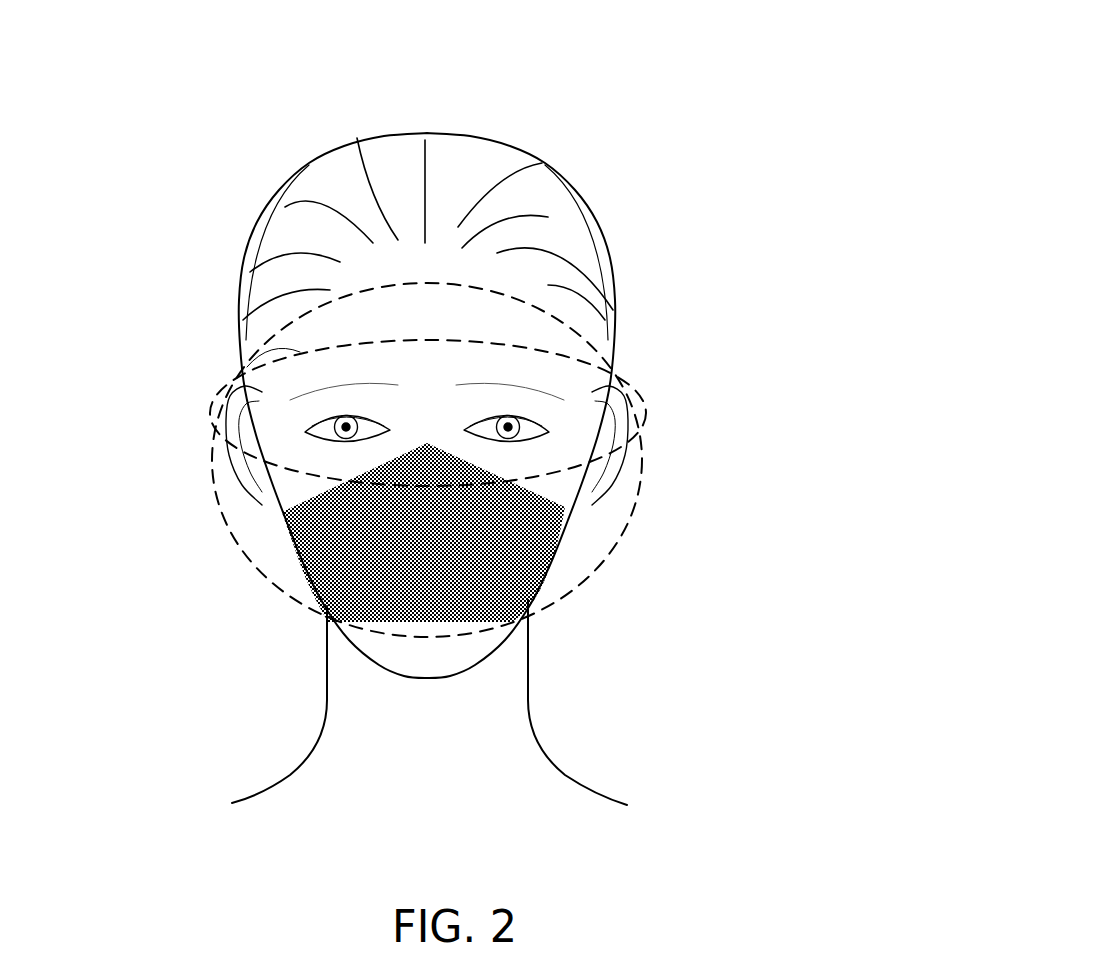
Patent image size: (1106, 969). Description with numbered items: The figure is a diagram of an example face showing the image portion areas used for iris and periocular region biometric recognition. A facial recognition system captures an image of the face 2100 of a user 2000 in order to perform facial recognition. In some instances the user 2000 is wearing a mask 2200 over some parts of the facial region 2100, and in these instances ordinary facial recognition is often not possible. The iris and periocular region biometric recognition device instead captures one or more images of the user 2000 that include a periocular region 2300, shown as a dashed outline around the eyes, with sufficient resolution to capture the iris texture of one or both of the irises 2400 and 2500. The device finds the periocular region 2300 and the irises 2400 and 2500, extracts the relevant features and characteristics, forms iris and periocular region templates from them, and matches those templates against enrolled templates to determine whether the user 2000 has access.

The user 2000 is at (900, 72).
The face 2100 is at (645, 460).
The mask 2200 is at (427, 542).
The periocular region 2300 is at (637, 392).
The iris 2400 is at (327, 427).
The iris 2500 is at (525, 425).